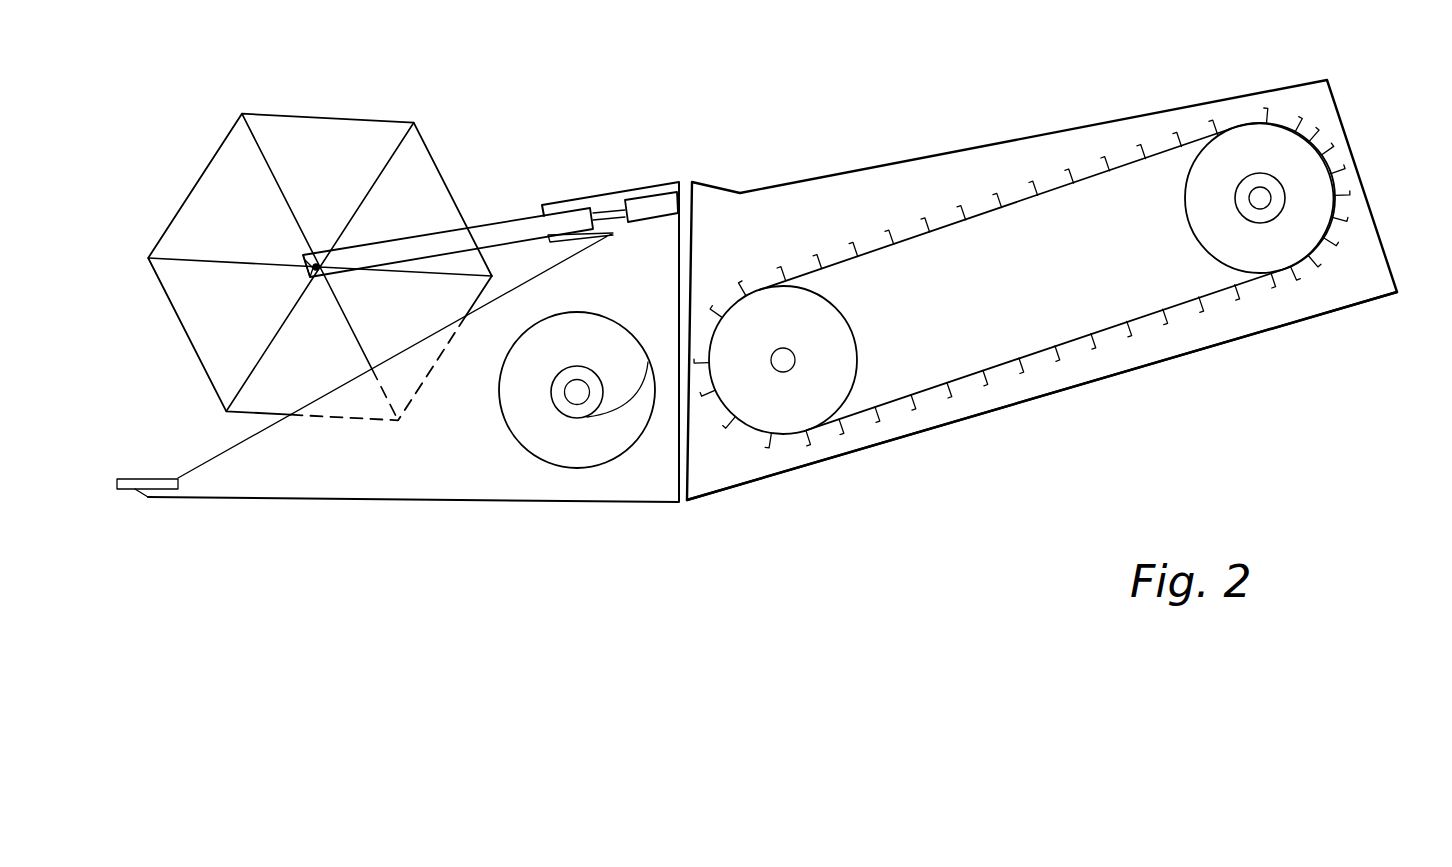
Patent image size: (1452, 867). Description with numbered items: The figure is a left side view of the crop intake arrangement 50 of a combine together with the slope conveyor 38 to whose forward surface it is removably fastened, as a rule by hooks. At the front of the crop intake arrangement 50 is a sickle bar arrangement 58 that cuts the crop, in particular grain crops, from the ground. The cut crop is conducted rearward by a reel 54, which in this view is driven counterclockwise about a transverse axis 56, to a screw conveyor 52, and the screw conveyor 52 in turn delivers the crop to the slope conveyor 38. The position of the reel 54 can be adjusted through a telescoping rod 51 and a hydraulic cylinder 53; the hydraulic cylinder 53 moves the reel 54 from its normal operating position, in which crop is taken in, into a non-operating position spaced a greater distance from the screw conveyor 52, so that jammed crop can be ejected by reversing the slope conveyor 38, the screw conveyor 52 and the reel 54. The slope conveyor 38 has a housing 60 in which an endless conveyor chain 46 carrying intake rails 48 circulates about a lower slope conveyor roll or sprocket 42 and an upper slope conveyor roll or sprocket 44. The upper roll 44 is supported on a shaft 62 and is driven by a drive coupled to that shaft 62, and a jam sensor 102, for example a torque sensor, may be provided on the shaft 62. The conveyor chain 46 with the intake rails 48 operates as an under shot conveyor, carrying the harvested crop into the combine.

The slope conveyor 38 is at (972, 138).
The lower slope conveyor roll or sprocket 42 is at (797, 417).
The upper slope conveyor roll or sprocket 44 is at (1300, 262).
The endless conveyor chain 46 is at (1193, 306).
The intake rails 48 is at (1114, 338).
The crop intake arrangement 50 is at (487, 524).
The telescoping rod 51 is at (510, 215).
The screw conveyor 52 is at (588, 455).
The hydraulic cylinder 53 is at (651, 196).
The reel 54 is at (441, 185).
The transverse axis 56 is at (318, 262).
The sickle bar arrangement 58 is at (133, 490).
The housing 60 is at (960, 423).
The shaft 62 is at (1262, 190).
The jam sensor 102 is at (1285, 195).